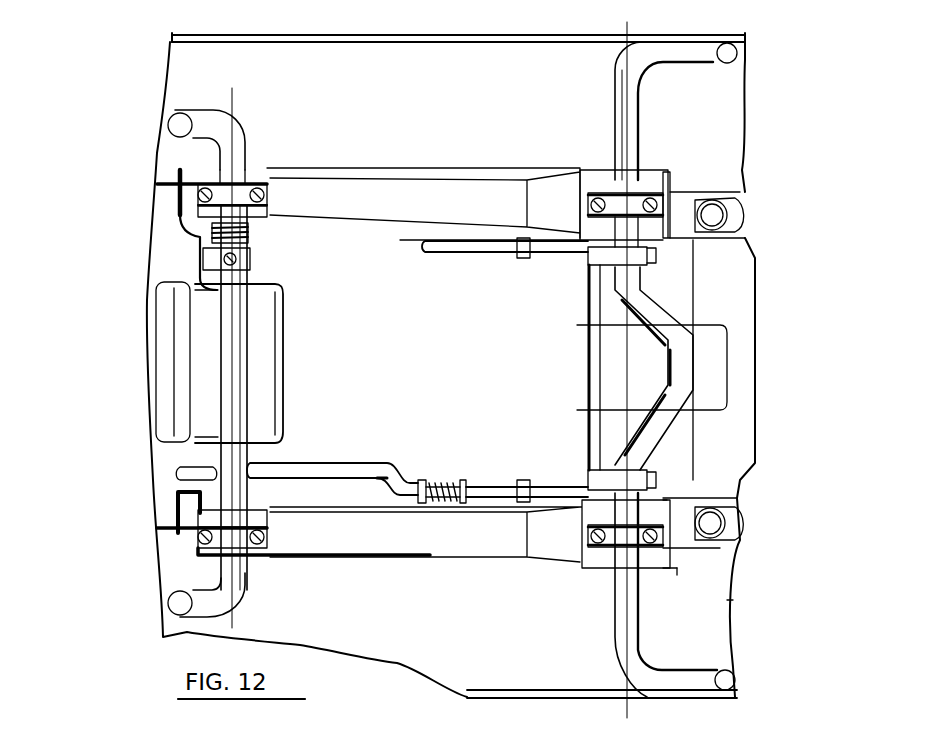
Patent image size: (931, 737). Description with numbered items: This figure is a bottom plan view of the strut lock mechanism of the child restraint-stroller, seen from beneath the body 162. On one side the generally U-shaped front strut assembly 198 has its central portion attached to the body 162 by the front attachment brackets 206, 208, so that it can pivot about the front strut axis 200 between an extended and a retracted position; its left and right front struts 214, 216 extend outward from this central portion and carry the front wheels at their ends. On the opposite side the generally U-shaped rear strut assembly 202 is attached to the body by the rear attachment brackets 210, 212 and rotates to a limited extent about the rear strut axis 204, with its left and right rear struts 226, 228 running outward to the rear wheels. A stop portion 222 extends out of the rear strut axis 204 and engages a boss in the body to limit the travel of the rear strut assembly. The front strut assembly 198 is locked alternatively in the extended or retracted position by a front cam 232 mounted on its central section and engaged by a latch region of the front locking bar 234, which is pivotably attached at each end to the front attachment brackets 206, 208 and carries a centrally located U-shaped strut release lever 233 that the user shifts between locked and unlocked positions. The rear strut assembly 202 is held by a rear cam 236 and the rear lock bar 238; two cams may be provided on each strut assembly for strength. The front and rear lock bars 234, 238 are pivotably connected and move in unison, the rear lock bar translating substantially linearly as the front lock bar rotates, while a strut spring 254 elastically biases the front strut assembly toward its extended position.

The body 162 is at (205, 34).
The front strut assembly 198 is at (240, 577).
The front strut axis 200 is at (230, 347).
The rear strut assembly 202 is at (640, 609).
The rear strut axis 204 is at (628, 589).
The front attachment bracket 206 is at (252, 176).
The front attachment bracket 208 is at (205, 548).
The rear attachment bracket 210 is at (642, 203).
The rear attachment bracket 212 is at (643, 522).
The left front strut 214 is at (176, 111).
The right front strut 216 is at (193, 617).
The stop portion 222 is at (673, 392).
The left rear strut 226 is at (685, 47).
The right rear strut 228 is at (663, 680).
The front cam 232 is at (203, 257).
The strut release lever 233 is at (273, 397).
The front locking bar 234 is at (180, 228).
The rear cam 236 is at (655, 261).
The rear lock bar 238 is at (598, 307).
The strut spring 254 is at (250, 240).